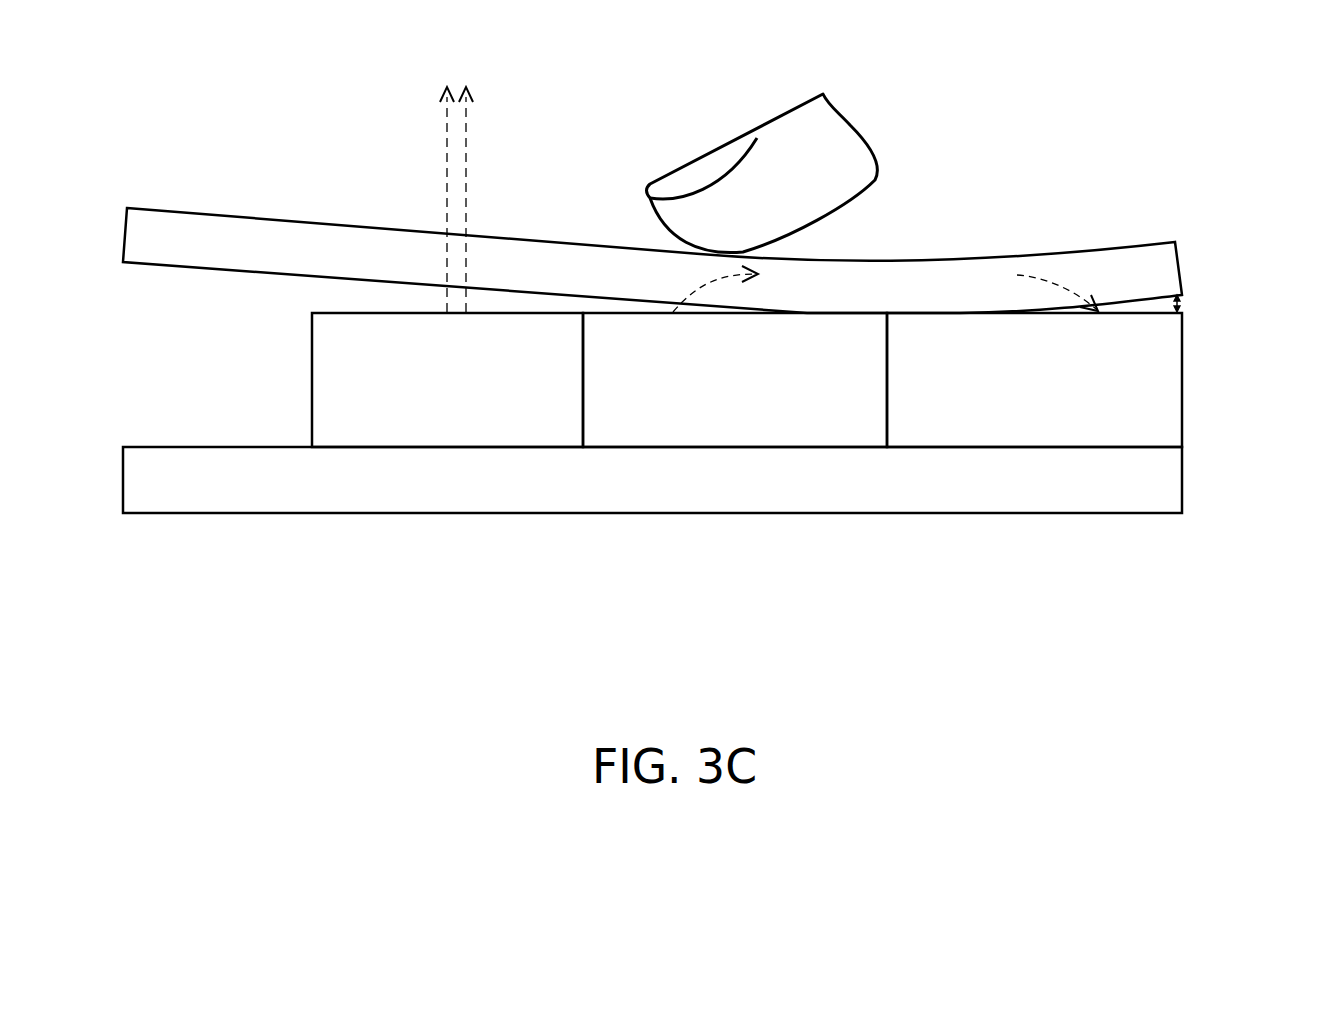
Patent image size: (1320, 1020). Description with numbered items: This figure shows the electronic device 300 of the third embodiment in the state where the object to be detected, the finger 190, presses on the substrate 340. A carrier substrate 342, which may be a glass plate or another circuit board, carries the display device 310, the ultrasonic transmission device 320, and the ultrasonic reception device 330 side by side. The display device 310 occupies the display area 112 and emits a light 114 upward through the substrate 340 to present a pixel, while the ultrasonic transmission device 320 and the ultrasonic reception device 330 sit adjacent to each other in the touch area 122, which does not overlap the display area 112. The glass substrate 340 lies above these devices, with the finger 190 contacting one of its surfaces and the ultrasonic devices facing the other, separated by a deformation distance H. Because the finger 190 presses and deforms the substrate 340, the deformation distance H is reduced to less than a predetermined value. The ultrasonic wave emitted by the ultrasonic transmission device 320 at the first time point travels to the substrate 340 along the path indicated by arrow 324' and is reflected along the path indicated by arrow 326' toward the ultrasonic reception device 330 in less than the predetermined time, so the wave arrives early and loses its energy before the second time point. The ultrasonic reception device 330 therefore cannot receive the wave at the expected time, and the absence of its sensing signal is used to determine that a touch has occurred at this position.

The electronic device 300 is at (1280, 697).
The carrier substrate 342 is at (1163, 483).
The substrate 340 is at (1165, 265).
The display device 310 is at (457, 447).
The ultrasonic transmission device 320 is at (790, 447).
The ultrasonic reception device 330 is at (1034, 441).
The display area 112 is at (447, 485).
The touch area 122 is at (882, 485).
The light 114 is at (445, 157).
The finger 190 is at (832, 142).
The arrow 324' is at (670, 249).
The arrow 326' is at (1070, 249).
The deformation distance H is at (1194, 303).